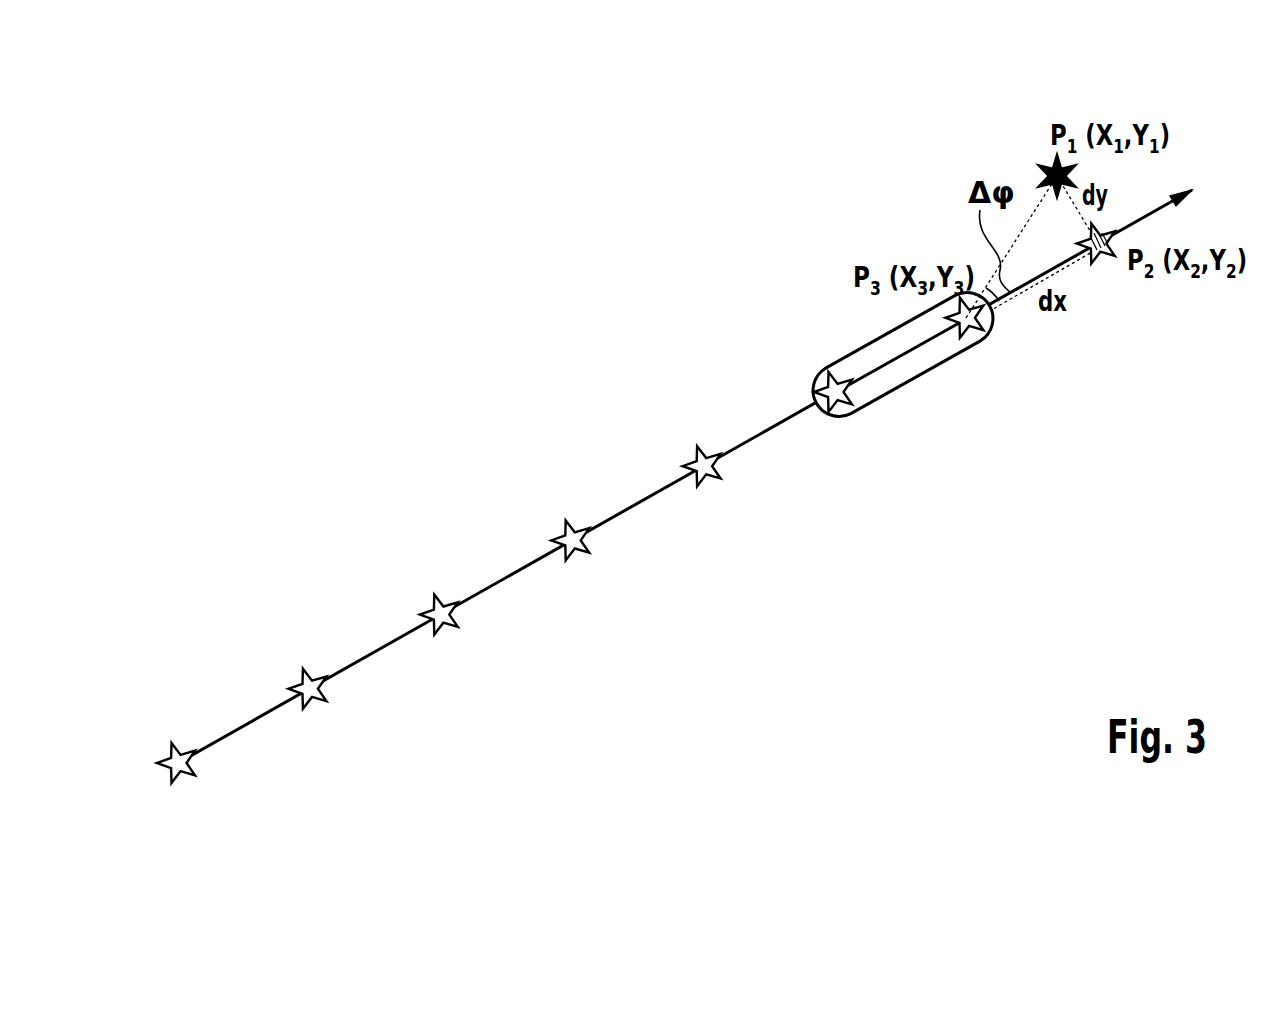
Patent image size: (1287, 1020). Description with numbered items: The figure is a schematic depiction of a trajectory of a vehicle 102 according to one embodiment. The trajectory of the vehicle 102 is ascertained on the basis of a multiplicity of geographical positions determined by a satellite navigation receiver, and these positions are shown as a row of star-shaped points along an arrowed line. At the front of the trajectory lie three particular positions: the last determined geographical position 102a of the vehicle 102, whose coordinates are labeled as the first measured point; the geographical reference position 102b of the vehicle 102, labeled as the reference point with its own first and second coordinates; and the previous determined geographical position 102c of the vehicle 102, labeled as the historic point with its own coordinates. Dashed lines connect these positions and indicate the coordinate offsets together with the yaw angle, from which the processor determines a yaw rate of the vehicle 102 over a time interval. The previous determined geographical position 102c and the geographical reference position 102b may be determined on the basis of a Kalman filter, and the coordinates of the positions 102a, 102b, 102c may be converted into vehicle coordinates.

The vehicle 102 is at (878, 398).
The geographical position (measured) P1 102a is at (1043, 173).
The geographical reference position P2 102b is at (1103, 255).
The previous determined geographical position (historic) P3 102c is at (961, 337).